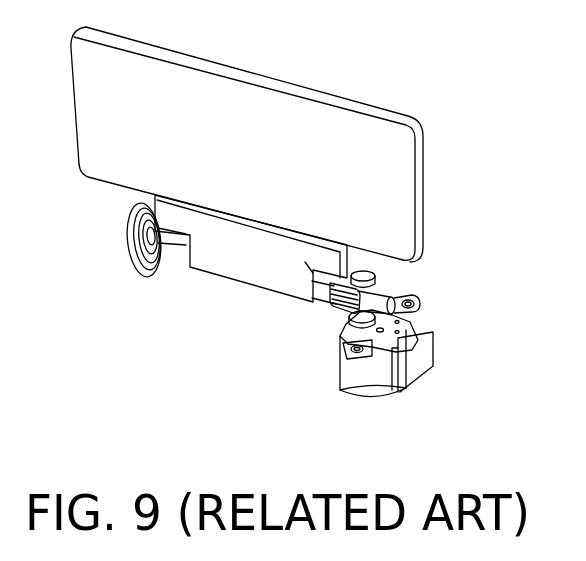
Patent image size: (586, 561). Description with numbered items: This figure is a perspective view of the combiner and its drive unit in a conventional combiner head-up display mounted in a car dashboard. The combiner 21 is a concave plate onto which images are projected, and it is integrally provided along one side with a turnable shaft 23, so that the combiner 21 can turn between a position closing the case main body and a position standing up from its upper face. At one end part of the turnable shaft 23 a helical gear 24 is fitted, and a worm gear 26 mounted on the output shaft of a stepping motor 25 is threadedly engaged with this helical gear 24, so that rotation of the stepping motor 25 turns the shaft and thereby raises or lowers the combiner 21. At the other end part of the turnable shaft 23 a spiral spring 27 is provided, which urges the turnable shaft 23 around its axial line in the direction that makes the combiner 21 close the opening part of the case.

The combiner 21 is at (343, 120).
The turnable shaft 23 is at (178, 253).
The helical gear 24 is at (342, 306).
The stepping motor 25 is at (364, 383).
The worm gear 26 is at (378, 282).
The spiral spring 27 is at (128, 262).